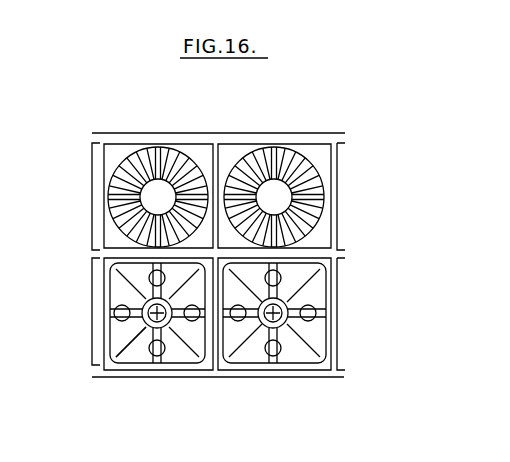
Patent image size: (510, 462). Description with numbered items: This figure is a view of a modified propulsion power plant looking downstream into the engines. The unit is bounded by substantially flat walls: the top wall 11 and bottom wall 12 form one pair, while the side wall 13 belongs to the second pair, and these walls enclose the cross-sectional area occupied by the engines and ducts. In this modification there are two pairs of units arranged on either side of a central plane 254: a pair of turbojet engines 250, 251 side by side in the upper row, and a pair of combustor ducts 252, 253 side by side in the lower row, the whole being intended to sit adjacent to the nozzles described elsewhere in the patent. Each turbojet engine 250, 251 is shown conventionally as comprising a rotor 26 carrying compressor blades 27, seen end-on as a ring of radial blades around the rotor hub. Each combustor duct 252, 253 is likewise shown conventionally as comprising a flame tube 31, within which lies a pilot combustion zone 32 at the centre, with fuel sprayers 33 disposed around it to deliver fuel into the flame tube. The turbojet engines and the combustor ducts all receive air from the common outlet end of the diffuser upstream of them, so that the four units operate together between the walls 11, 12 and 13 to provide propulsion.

The top wall 11 is at (229, 134).
The bottom wall 12 is at (215, 378).
The side wall 13 is at (101, 166).
The rotor 26 is at (161, 190).
The compressor blades 27 is at (303, 153).
The flame tube 31 is at (130, 292).
The pilot combustion zone 32 is at (145, 315).
The fuel sprayers 33 is at (152, 351).
The turbojet engine 250 is at (118, 237).
The turbojet engine 251 is at (228, 163).
The combustor duct 252 is at (122, 347).
The combustor duct 253 is at (253, 352).
The central plane 254 is at (323, 252).